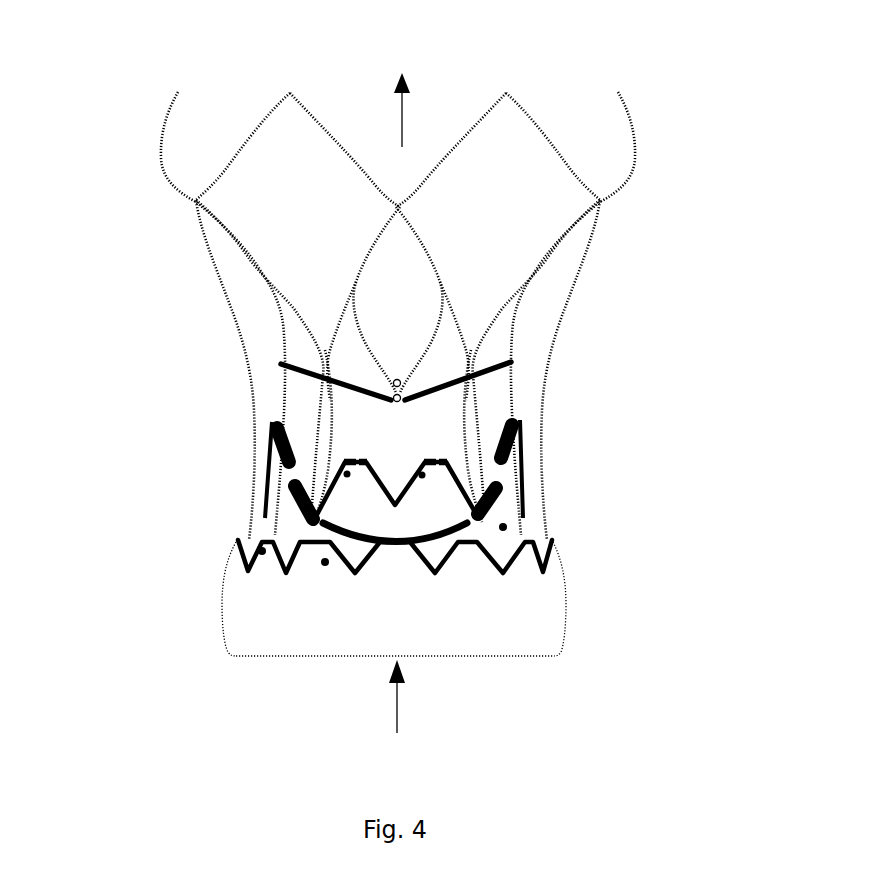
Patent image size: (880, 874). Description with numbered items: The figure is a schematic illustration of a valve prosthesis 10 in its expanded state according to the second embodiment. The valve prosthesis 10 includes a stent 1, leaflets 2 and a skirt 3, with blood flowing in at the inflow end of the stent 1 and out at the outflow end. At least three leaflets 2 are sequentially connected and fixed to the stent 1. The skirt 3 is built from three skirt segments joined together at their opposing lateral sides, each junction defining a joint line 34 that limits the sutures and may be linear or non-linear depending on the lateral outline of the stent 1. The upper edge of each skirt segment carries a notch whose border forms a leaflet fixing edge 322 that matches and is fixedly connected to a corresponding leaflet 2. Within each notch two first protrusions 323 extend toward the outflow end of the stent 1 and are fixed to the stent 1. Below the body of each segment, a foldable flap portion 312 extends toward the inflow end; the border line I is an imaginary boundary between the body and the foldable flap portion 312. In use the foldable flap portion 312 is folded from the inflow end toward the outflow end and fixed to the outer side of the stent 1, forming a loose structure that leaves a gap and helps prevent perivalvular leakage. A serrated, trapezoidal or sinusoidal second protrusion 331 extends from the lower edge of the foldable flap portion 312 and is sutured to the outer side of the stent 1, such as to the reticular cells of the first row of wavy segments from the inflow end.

The valve prosthesis 10 is at (107, 53).
The stent 1 is at (624, 172).
The leaflet 2 is at (483, 391).
The skirt 3 is at (506, 525).
The joint line 34 is at (546, 449).
The leaflet fixing edge 322 is at (312, 515).
The first protrusion 323 is at (410, 468).
The second protrusion 331 is at (322, 563).
The foldable flap portion 312 is at (545, 615).
The border line I is at (505, 658).